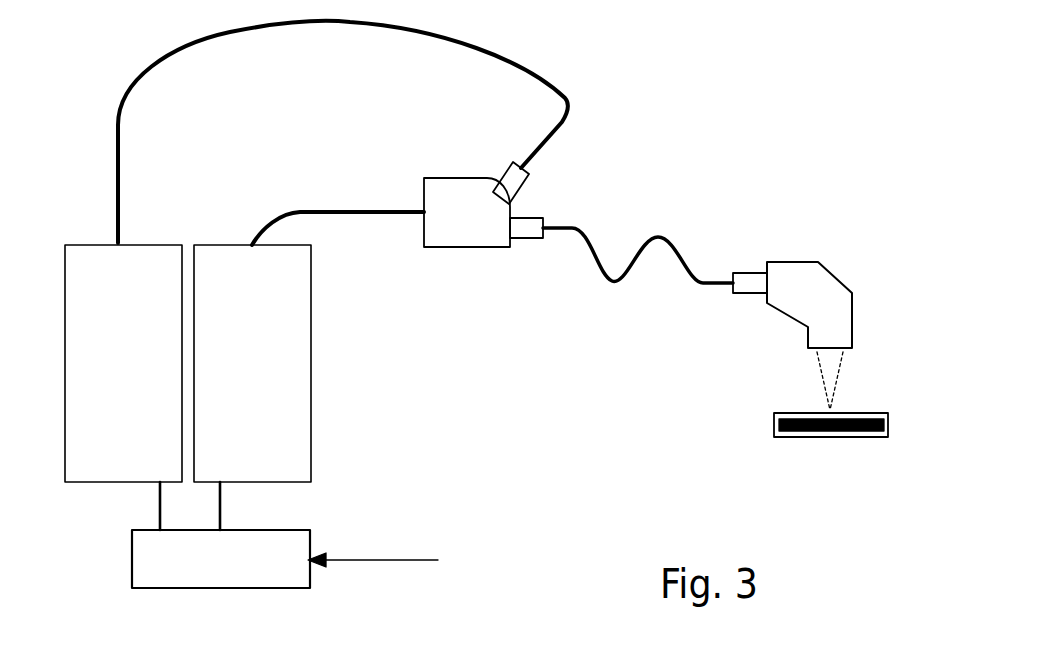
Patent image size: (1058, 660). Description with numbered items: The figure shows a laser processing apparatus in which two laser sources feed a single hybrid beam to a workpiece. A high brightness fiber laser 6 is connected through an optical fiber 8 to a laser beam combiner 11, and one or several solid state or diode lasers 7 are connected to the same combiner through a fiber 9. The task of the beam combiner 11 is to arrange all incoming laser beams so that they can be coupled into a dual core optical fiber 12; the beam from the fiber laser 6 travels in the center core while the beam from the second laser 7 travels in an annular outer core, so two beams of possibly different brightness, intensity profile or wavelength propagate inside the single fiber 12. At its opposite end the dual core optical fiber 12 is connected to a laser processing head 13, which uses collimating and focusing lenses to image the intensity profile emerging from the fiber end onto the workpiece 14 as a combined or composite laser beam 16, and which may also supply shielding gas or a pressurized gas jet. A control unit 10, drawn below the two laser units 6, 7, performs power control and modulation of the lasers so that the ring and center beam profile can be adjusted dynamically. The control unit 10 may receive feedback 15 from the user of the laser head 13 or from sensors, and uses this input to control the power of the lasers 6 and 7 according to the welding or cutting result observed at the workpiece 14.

The high brightness fiber laser 6 is at (132, 485).
The solid state or diode laser 7 is at (312, 287).
The optical fiber 8 is at (116, 207).
The fiber 9 is at (290, 212).
The control unit 10 is at (267, 528).
The laser beam combiner 11 is at (467, 177).
The dual core optical fiber 12 is at (612, 282).
The laser processing head 13 is at (827, 267).
The workpiece 14 is at (774, 427).
The feedback 15 is at (390, 540).
The combined laser beam 16 is at (830, 380).